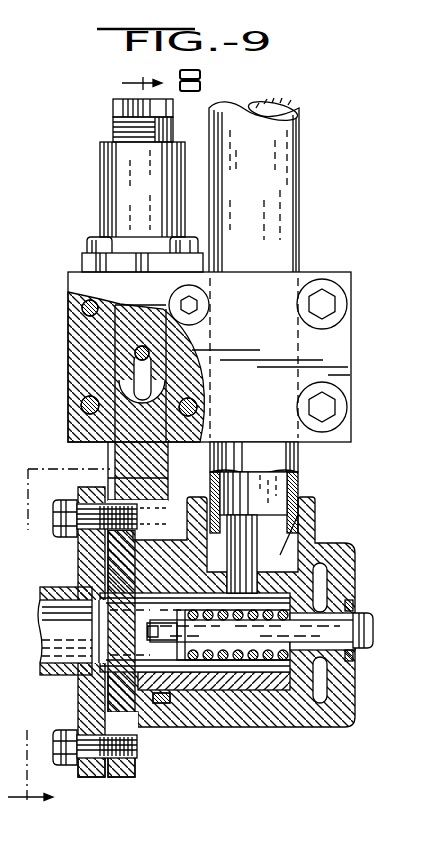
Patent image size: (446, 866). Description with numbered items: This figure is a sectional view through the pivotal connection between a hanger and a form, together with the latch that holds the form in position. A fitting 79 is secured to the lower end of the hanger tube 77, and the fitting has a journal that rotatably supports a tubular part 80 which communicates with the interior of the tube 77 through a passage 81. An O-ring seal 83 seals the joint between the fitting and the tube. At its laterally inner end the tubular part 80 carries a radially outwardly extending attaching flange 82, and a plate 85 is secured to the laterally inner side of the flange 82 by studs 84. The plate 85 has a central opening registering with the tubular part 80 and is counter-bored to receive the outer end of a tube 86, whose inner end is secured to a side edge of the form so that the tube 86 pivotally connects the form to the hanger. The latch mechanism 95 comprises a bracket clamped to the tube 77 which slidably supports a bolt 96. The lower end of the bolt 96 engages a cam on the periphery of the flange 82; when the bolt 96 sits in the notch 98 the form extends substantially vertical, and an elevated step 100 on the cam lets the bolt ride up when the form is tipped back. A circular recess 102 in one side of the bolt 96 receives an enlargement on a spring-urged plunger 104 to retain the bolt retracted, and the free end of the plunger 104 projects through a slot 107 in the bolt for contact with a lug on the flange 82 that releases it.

The tube 77 is at (288, 256).
The fitting 79 is at (320, 545).
The tubular part 80 is at (318, 602).
The passage 81 is at (273, 550).
The attaching flange 82 is at (120, 772).
The O-ring seal 83 is at (165, 703).
The studs 84 is at (72, 506).
The plate 85 is at (93, 765).
The tube 86 is at (66, 672).
The latch mechanism 95 is at (101, 172).
The bolt 96 is at (147, 318).
The notch 98 is at (155, 472).
The elevated step 100 is at (46, 650).
The circular recess 102 is at (162, 380).
The plunger 104 is at (135, 352).
The slot 107 is at (137, 384).